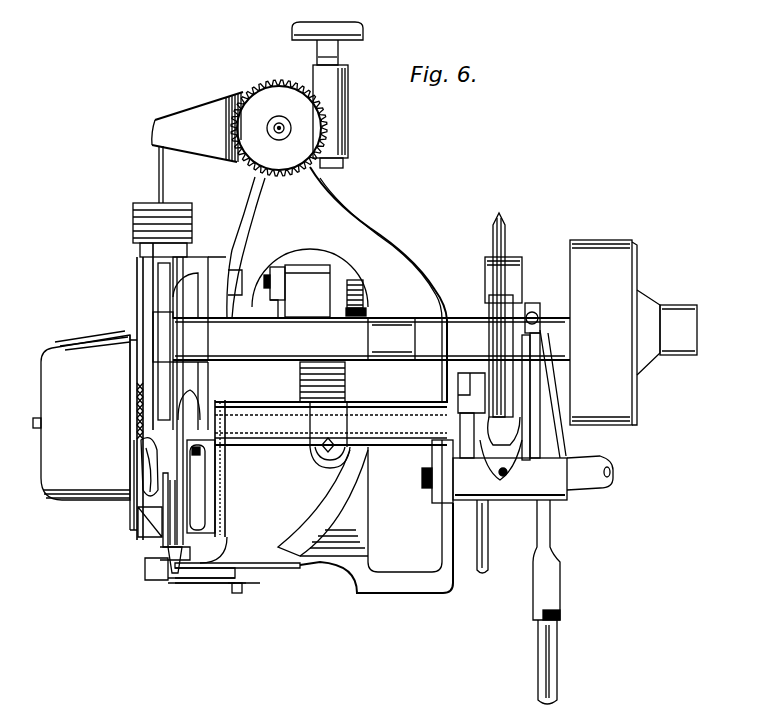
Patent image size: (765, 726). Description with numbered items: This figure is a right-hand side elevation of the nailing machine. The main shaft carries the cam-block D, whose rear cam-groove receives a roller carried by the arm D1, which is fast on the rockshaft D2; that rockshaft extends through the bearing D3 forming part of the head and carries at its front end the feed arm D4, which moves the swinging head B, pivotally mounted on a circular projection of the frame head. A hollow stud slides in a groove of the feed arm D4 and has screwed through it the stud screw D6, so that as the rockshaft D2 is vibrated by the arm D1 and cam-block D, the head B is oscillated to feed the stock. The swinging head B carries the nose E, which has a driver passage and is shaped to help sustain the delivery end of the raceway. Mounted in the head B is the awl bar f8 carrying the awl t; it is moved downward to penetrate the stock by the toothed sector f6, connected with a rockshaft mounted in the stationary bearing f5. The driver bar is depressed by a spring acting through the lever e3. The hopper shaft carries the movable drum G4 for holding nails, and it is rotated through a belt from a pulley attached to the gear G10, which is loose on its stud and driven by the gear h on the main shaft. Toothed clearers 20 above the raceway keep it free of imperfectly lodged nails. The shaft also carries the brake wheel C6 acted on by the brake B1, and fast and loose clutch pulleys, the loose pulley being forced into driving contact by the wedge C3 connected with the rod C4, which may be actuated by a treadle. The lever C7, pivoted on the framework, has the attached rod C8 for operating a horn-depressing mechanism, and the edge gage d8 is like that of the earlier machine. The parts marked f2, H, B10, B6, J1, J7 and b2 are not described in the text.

The lever e3 is at (176, 111).
The knob spindle f2 is at (270, 267).
The cam-block D is at (318, 273).
The frame H is at (398, 255).
The gear G10 is at (358, 288).
The stationary bearing f5 is at (238, 318).
The swinging head B is at (140, 245).
The gear h is at (358, 352).
The arm D1 is at (335, 370).
The drum B10 is at (594, 240).
The brake B1 is at (530, 362).
The brake wheel C6 is at (504, 250).
The lever C7 is at (463, 345).
The wedge C3 is at (548, 390).
The rail B6 is at (350, 374).
The rockshaft D2 is at (330, 466).
The bearing D3 is at (335, 480).
The feed arm D4 is at (230, 530).
The nose E is at (177, 568).
The movable drum G4 is at (66, 348).
The toothed sector f6 is at (160, 328).
The awl bar f8 is at (163, 396).
The toothed clearer 20 is at (138, 390).
The awl t is at (178, 497).
The needle bar J1 is at (152, 495).
The latch J7 is at (145, 490).
The stud screw D6 is at (170, 505).
The block b2 is at (185, 563).
The edge gage d8 is at (180, 584).
The rod C8 is at (486, 566).
The rod C4 is at (553, 662).